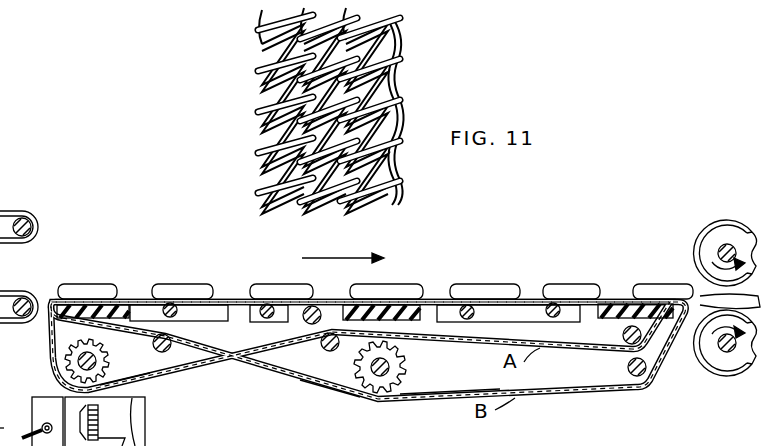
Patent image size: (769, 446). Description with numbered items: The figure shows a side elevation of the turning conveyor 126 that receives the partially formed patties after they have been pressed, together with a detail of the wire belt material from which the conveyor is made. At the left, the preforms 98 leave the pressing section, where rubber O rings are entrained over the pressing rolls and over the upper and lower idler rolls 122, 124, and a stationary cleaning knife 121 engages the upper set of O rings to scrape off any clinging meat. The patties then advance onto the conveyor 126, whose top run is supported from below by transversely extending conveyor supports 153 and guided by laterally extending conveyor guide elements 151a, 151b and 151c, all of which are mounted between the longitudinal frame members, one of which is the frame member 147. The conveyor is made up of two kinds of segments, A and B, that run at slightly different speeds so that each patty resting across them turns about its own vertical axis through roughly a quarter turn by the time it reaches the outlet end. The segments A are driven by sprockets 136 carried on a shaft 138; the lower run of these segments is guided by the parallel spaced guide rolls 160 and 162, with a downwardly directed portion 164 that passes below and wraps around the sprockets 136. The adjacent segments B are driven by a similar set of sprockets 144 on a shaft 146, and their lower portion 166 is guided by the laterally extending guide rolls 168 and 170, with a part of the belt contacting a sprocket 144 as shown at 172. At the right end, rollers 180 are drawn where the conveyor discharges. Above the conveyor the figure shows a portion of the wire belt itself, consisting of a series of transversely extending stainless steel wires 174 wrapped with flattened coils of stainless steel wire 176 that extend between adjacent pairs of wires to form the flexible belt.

The preforms 98 is at (398, 282).
The stationary cleaning knife 121 is at (18, 286).
The upper idler roll 122 is at (21, 217).
The lower idler roll 124 is at (36, 303).
The conveyor 126 is at (262, 258).
The sprockets 136 is at (76, 348).
The shaft 138 is at (80, 364).
The sprockets 144 is at (405, 349).
The shaft 146 is at (398, 372).
The frame member 147 is at (165, 421).
The conveyor guide element 151a is at (87, 303).
The conveyor guide element 151b is at (378, 302).
The conveyor guide element 151c is at (630, 302).
The conveyor supports 153 is at (171, 303).
The guide roll 160 is at (325, 350).
The guide roll 162 is at (622, 327).
The downwardly directed portion 164 is at (155, 385).
The lower portion 166 is at (517, 398).
The guide roll 168 is at (176, 362).
The guide roll 170 is at (627, 367).
The sprocket contact portion 172 is at (382, 398).
The transversely extending stainless steel wires 174 is at (368, 197).
The flattened coils of stainless steel wire 176 is at (255, 70).
The nip rollers 180 is at (737, 212).